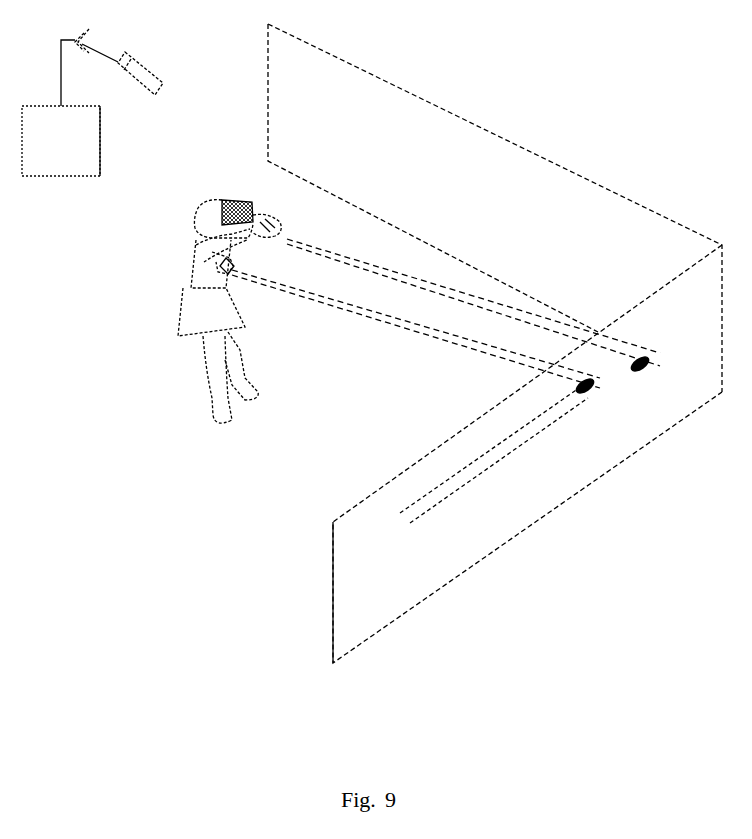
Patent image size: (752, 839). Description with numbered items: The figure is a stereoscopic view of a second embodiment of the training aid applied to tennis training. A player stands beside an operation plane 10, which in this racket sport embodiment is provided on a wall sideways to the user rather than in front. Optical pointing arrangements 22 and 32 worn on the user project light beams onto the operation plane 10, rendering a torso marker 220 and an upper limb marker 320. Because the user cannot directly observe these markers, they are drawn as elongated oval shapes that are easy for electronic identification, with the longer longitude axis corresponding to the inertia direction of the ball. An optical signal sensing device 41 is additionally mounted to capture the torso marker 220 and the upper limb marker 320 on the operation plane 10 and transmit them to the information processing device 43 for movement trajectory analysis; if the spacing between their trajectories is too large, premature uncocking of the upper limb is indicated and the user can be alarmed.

The operation plane 10 is at (500, 523).
The hand-held light emitting device 22 is at (232, 277).
The head-mounted light emitting device 32 is at (272, 238).
The camera sensor 41 is at (155, 76).
The information processing device 43 is at (66, 166).
The torso marker 220 is at (588, 392).
The upper limb marker 320 is at (643, 371).